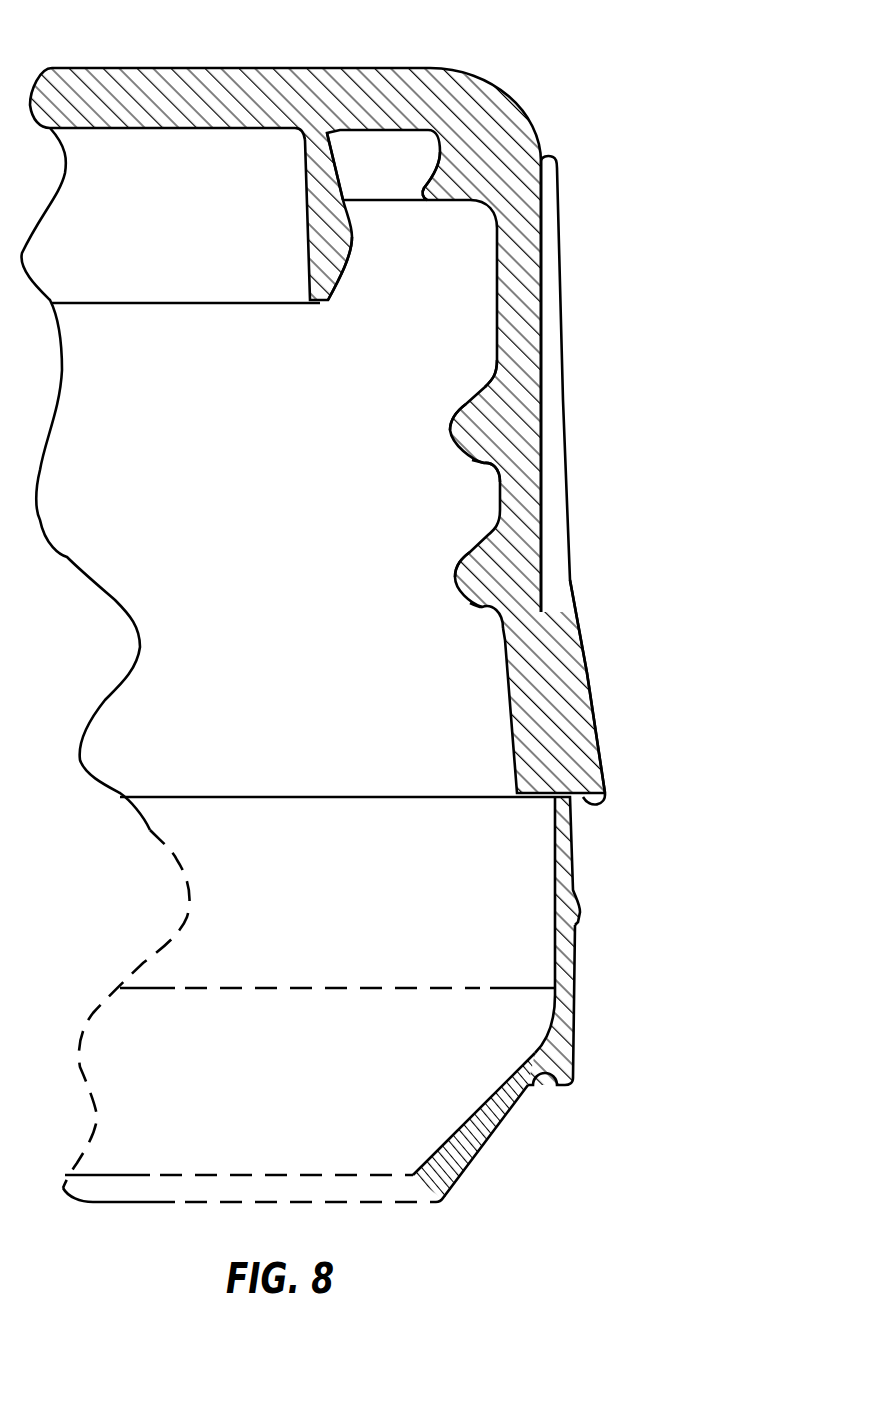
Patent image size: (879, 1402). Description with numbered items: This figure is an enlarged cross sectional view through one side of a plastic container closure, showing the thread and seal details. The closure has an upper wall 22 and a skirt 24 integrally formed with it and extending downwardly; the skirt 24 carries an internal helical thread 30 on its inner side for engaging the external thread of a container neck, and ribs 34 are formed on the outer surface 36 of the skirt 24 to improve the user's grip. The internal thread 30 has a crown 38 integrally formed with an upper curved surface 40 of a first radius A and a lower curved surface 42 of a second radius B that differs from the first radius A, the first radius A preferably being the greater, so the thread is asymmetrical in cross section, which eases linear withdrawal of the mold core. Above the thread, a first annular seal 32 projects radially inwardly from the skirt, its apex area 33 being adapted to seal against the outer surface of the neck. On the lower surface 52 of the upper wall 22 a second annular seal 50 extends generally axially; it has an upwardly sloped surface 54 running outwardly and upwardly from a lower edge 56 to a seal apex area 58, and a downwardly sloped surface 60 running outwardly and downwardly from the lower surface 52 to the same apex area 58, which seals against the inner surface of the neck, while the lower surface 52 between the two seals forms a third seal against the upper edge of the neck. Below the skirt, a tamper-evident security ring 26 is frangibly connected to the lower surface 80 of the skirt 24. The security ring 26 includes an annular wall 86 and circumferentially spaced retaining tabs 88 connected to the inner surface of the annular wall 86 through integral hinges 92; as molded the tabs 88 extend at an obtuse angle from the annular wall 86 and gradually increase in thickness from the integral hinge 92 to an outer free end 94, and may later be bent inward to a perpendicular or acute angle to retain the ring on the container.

The upper wall 22 is at (230, 68).
The skirt 24 is at (358, 430).
The tamper-evident security ring 26 is at (392, 941).
The internal helical thread 30 is at (578, 387).
The first annular seal 32 is at (392, 104).
The apex area of first annular seal 33 is at (469, 174).
The ribs 34 is at (599, 474).
The outer surface of skirt 36 is at (627, 686).
The crown 38 is at (416, 518).
The upper curved surface 40 is at (424, 479).
The lower curved surface 42 is at (440, 557).
The second annular seal 50 is at (289, 220).
The lower surface of upper wall 52 is at (177, 164).
The upwardly sloped surface 54 is at (380, 269).
The lower edge 56 is at (186, 339).
The seal apex area 58 is at (420, 280).
The downwardly sloped surface 60 is at (377, 166).
The lower surface of skirt 80 is at (648, 782).
The annular wall 86 is at (613, 1004).
The retaining tabs 88 is at (496, 1127).
The integral hinges 92 is at (595, 1056).
The outer free end 94 is at (275, 1215).
The first radius A is at (424, 341).
The second radius B is at (438, 508).